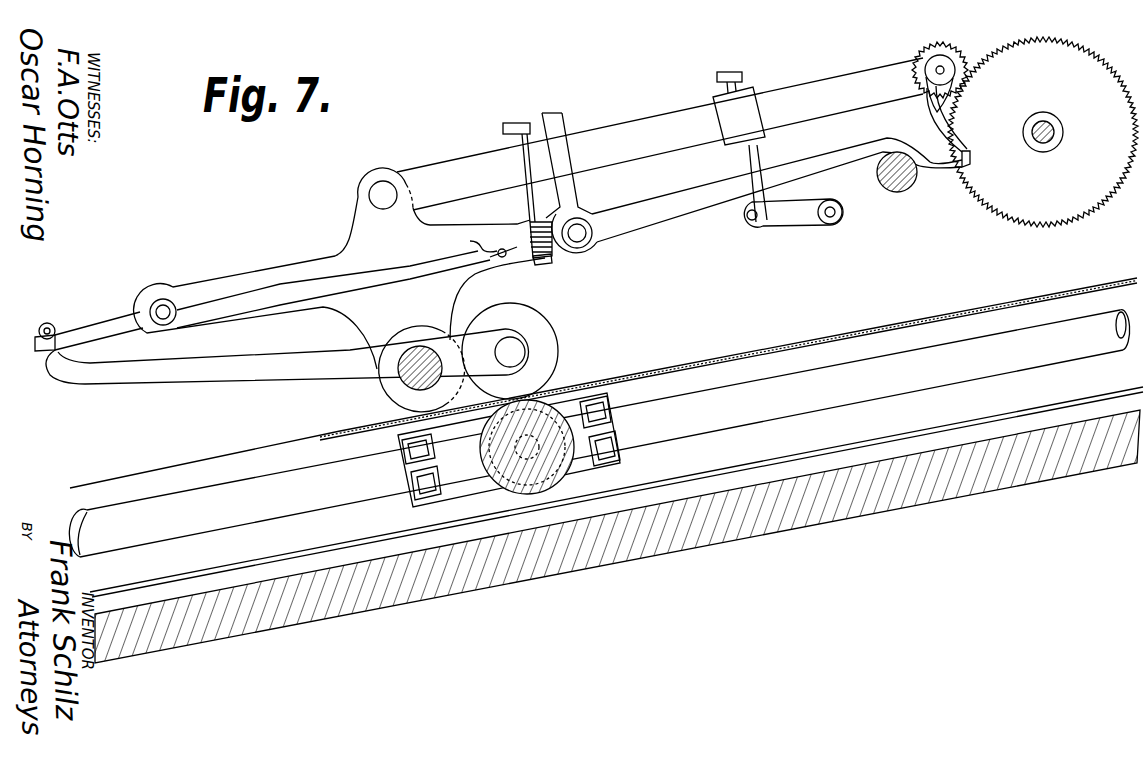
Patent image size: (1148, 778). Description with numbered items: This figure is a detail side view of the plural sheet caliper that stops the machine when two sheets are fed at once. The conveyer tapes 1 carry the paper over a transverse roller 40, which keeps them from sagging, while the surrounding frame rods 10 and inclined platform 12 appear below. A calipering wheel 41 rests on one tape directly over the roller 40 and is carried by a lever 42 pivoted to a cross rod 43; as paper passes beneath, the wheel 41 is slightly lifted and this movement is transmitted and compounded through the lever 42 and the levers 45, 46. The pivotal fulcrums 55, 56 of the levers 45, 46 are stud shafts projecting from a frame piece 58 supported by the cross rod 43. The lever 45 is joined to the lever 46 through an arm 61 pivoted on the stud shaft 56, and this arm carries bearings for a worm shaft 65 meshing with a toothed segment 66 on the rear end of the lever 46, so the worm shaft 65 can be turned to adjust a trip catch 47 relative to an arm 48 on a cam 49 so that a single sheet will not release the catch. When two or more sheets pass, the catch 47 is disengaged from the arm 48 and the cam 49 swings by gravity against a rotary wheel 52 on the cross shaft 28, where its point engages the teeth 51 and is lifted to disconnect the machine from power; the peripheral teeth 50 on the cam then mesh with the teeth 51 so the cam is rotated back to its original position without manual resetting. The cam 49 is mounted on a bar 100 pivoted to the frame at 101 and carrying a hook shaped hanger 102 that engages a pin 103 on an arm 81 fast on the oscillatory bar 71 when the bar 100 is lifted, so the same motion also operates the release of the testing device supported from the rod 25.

The conveyer tapes 1 is at (1072, 280).
The frame rods 10 is at (599, 433).
The inclined platform 12 is at (822, 508).
The rod 25 is at (898, 178).
The rotary cross shaft 28 is at (1053, 132).
The transverse roller 40 is at (490, 425).
The calipering wheel 41 is at (553, 345).
The lever 42 is at (287, 356).
The cross rod 43 is at (410, 373).
The lever 45 is at (90, 337).
The lever 46 is at (777, 190).
The trip catch 47 is at (971, 157).
The arm 48 is at (932, 115).
The cam 49 is at (945, 22).
The peripheral teeth 50 is at (928, 46).
The teeth 51 is at (1048, 44).
The rotary wheel 52 is at (1043, 132).
The pivotal fulcrum 55 is at (173, 310).
The pivotal fulcrum 56 is at (588, 238).
The frame piece 58 is at (339, 283).
The arm 61 is at (476, 246).
The worm shaft 65 is at (533, 257).
The toothed segment 66 is at (575, 246).
The oscillatory bar 71 is at (836, 212).
The arm 81 is at (793, 213).
The bar 100 is at (660, 134).
The pivot 101 is at (383, 198).
The hook shaped hanger 102 is at (762, 220).
The pin 103 is at (750, 221).